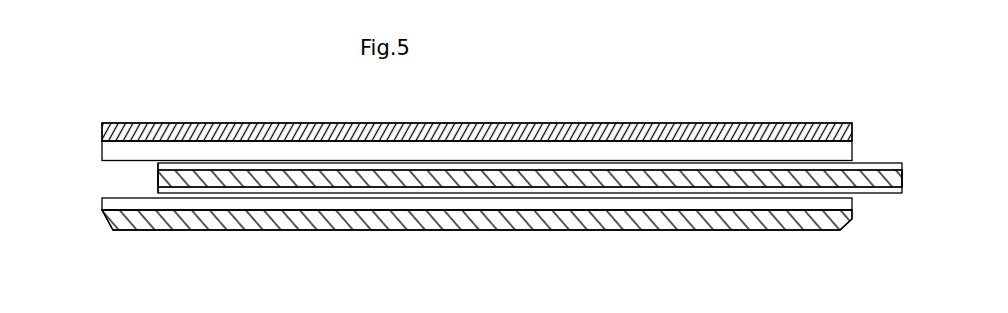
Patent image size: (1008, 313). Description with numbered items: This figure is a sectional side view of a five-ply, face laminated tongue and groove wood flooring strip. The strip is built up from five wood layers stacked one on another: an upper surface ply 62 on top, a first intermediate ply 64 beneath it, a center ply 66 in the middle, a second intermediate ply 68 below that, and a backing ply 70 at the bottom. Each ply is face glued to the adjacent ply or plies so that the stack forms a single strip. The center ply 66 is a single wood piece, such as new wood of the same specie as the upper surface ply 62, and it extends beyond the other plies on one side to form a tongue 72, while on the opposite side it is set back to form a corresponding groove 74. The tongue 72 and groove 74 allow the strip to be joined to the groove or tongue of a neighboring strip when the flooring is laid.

The upper surface ply 62 is at (522, 130).
The first intermediate ply 64 is at (683, 155).
The center ply 66 is at (863, 178).
The second intermediate ply 68 is at (698, 202).
The backing ply 70 is at (498, 222).
The tongue 72 is at (865, 148).
The groove 74 is at (117, 178).